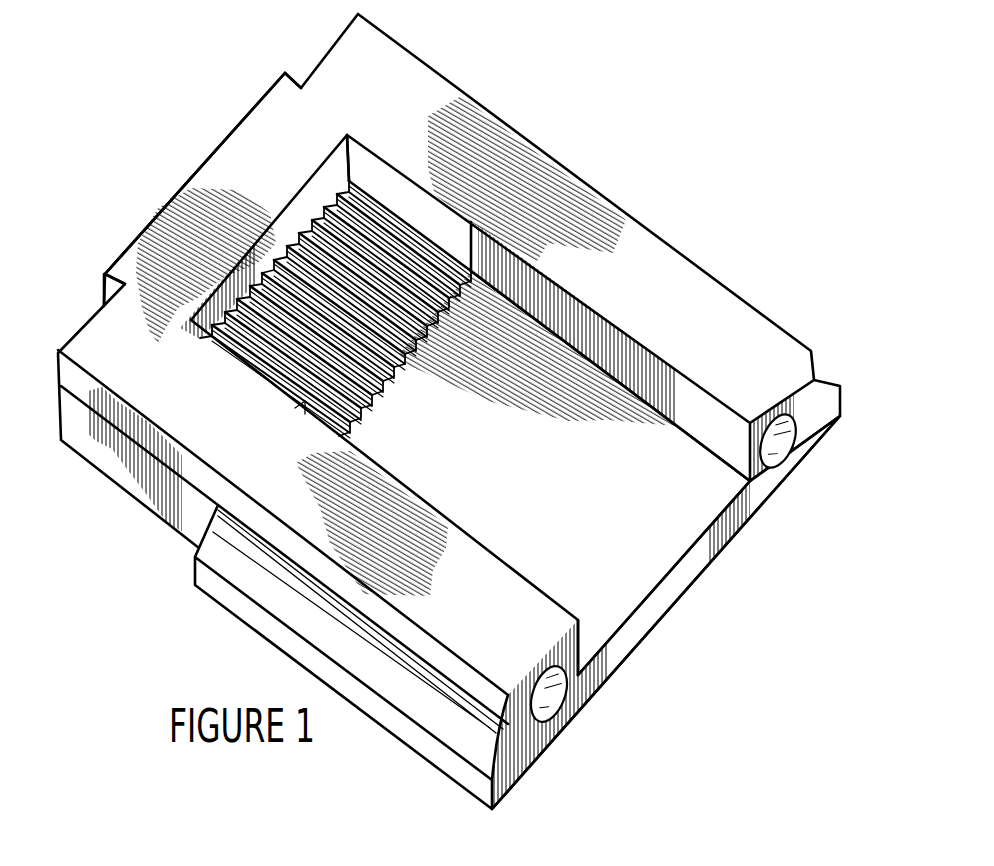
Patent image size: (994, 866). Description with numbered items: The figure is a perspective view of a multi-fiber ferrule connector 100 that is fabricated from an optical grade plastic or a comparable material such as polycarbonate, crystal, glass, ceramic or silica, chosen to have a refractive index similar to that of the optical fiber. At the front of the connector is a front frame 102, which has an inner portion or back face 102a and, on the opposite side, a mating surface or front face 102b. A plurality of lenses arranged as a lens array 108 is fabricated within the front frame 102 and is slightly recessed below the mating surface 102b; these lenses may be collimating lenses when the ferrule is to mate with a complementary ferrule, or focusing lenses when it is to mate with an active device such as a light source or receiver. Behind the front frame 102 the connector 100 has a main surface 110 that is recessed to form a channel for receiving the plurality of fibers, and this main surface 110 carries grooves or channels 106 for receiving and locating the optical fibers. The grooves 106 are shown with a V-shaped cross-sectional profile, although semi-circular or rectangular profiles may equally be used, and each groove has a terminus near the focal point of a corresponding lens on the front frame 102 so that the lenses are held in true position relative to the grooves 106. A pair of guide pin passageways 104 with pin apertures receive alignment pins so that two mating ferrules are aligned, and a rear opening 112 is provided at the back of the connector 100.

The multi-fiber ferrule connector 100 is at (595, 106).
The front frame 102 is at (114, 260).
The inner portion or back face 102a is at (317, 172).
The mating surface or front face 102b is at (202, 133).
The pin passageways 104 is at (774, 436).
The grooves or channels 106 is at (378, 247).
The lens array 108 is at (197, 240).
The main surface 110 is at (605, 443).
The rear opening 112 is at (658, 557).